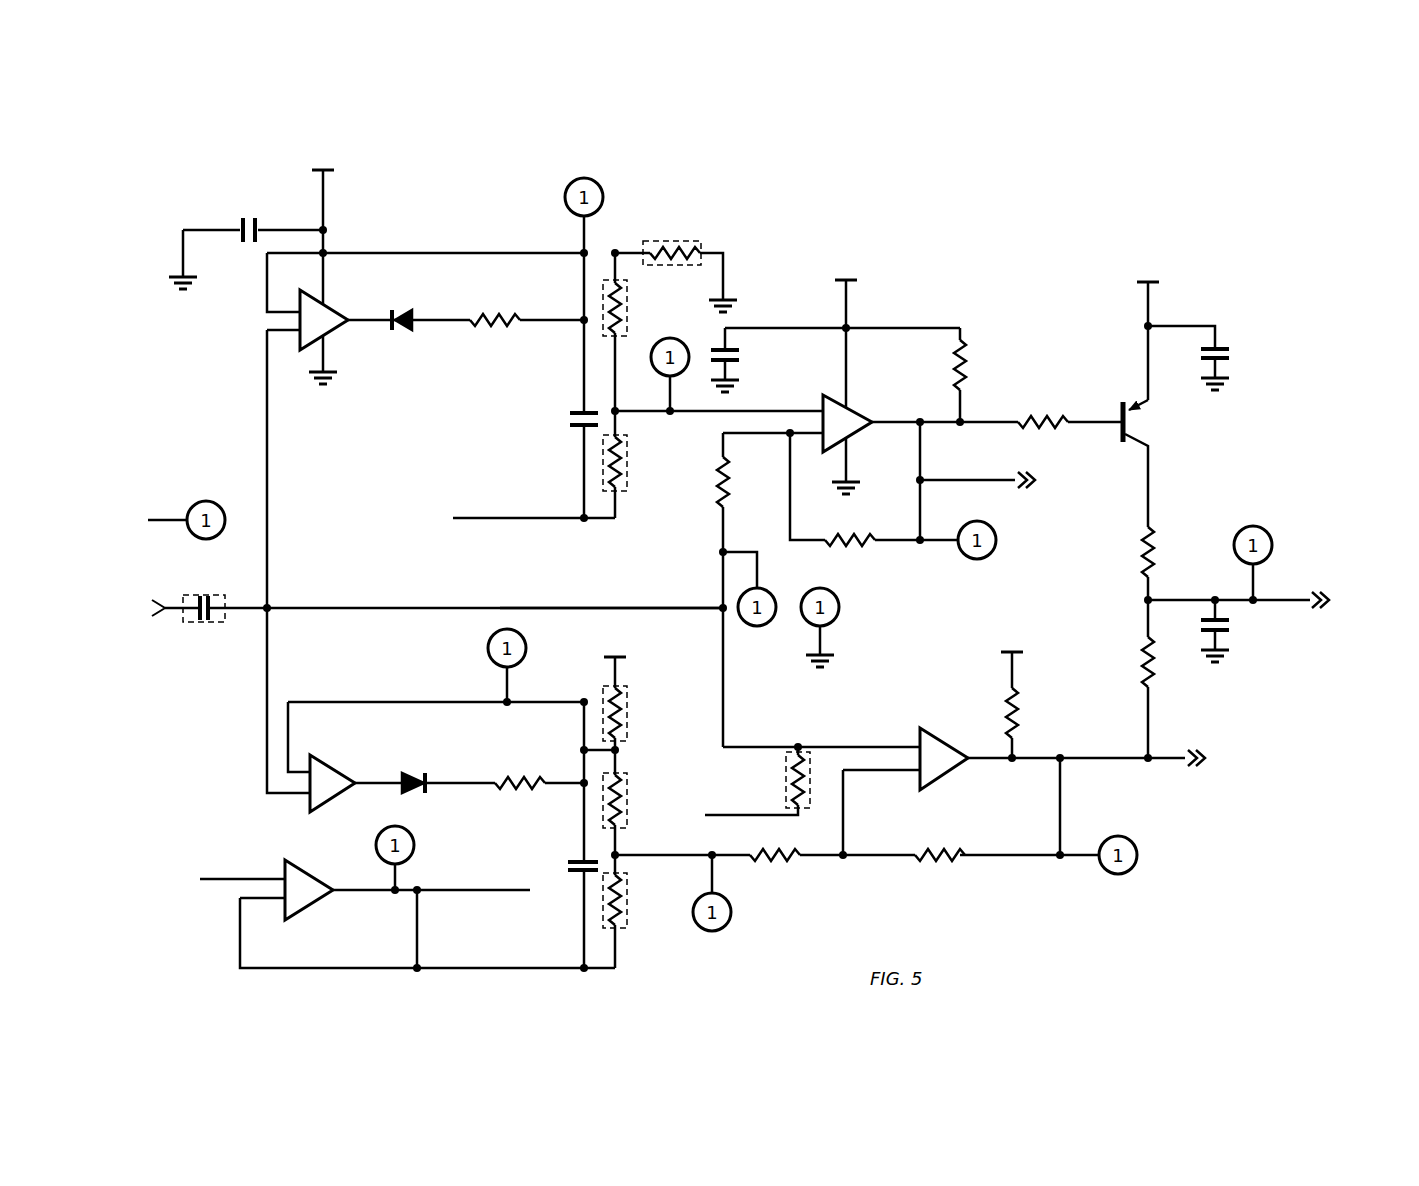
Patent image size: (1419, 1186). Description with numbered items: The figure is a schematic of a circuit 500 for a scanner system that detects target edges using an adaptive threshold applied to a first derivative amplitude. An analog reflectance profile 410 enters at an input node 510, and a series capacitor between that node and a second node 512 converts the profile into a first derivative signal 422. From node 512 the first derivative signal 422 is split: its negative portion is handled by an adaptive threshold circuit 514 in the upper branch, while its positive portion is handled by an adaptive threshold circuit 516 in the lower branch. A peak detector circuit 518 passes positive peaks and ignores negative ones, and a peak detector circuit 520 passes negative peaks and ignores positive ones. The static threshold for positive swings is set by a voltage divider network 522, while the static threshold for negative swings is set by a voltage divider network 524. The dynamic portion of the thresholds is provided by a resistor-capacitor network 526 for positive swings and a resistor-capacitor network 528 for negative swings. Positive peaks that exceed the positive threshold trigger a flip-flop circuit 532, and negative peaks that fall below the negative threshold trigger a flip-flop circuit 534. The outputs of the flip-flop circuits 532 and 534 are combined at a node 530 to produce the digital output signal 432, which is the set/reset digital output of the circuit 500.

The circuit 500 is at (1300, 200).
The analog reflectance profile 410 is at (130, 632).
The input node 510 is at (167, 601).
The node 512 is at (480, 607).
The first derivative signal 422 is at (558, 607).
The adaptive threshold circuit 514 is at (493, 236).
The adaptive threshold circuit 516 is at (253, 766).
The peak detector circuit 518 is at (430, 694).
The peak detector circuit 520 is at (380, 392).
The voltage divider network 522 is at (643, 684).
The voltage divider network 524 is at (620, 210).
The resistor-capacitor network 526 is at (566, 840).
The resistor-capacitor network 528 is at (545, 386).
The node 530 is at (1148, 600).
The flip-flop circuit 532 is at (1172, 806).
The flip-flop circuit 534 is at (963, 309).
The digital output signal 432 is at (1321, 608).